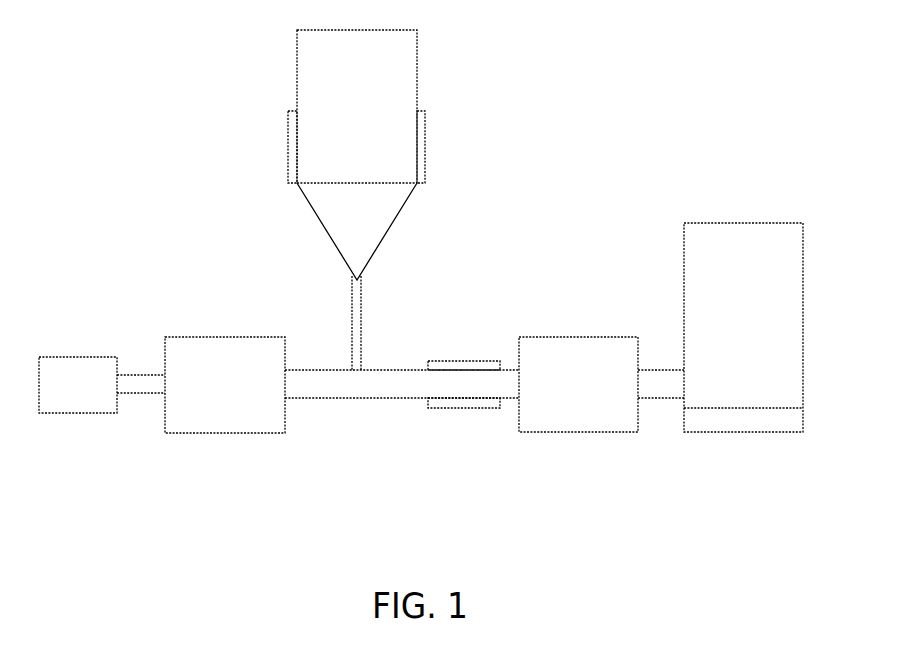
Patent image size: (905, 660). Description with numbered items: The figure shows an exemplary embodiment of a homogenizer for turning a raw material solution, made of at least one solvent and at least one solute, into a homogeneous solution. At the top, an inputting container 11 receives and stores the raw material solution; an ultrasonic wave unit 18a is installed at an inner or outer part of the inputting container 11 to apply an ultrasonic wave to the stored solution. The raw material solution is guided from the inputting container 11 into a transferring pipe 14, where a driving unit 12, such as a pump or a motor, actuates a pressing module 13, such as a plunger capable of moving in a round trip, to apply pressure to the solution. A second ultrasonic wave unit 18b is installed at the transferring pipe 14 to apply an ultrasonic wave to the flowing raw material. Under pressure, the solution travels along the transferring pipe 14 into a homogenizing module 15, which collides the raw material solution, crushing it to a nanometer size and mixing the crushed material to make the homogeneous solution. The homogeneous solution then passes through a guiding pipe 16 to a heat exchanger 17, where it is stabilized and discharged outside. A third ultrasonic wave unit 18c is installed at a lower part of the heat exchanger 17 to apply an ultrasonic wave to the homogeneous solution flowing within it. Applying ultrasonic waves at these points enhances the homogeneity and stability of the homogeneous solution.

The inputting container 11 is at (417, 68).
The ultrasonic wave unit 18a is at (425, 145).
The driving unit 12 is at (80, 357).
The pressing module 13 is at (225, 337).
The transferring pipe 14 is at (385, 398).
The ultrasonic wave unit 18b is at (465, 361).
The homogenizing module 15 is at (580, 337).
The guiding pipe 16 is at (667, 400).
The heat exchanger 17 is at (743, 223).
The ultrasonic wave unit 18c is at (742, 432).